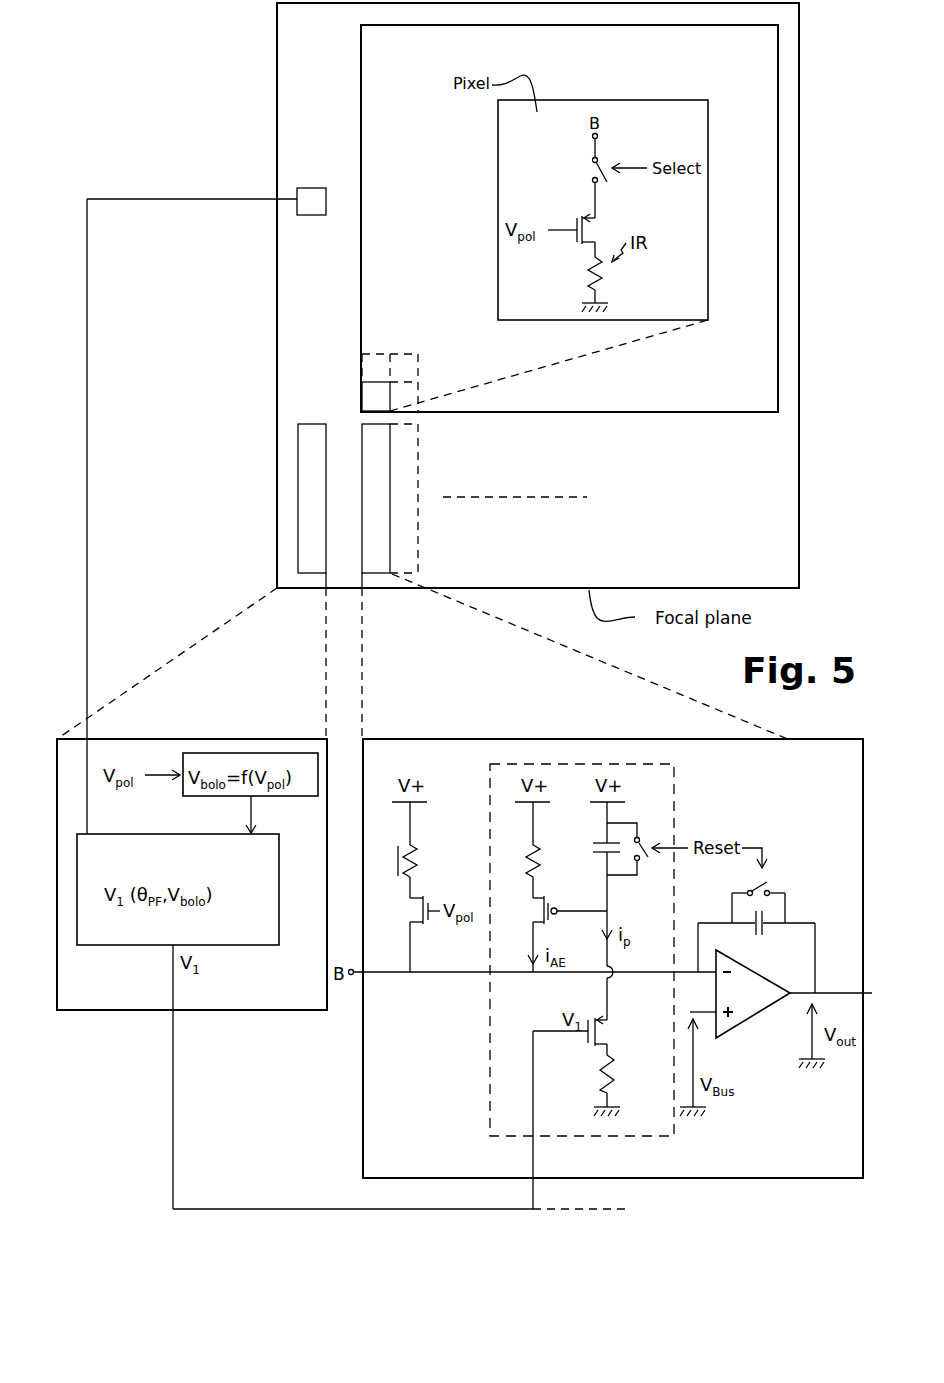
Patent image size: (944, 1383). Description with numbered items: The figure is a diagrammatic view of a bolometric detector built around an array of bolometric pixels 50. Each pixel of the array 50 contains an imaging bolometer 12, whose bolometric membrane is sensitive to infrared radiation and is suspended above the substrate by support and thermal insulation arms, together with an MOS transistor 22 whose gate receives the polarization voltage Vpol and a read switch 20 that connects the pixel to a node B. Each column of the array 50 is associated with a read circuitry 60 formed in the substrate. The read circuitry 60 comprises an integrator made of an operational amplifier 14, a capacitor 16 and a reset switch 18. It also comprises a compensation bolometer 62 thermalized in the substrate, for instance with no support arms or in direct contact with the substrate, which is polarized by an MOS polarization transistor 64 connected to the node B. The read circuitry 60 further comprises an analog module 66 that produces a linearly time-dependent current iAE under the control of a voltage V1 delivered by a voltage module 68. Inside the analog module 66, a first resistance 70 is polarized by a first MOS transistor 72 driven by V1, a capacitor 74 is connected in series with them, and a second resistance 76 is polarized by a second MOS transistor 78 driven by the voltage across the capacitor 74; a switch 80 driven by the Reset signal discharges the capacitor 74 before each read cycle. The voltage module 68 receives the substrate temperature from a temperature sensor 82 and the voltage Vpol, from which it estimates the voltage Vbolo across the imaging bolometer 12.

The imaging bolometer 12 is at (598, 283).
The operational amplifier 14 is at (758, 1004).
The capacitor 16 is at (767, 930).
The reset switch 18 is at (767, 882).
The read switch 20 is at (592, 171).
The MOS transistor 22 is at (590, 227).
The array of bolometric pixels 50 is at (361, 57).
The read circuitry 60 is at (363, 1082).
The compensation bolometer 62 is at (418, 858).
The MOS polarization transistor 64 is at (413, 913).
The analog module 66 is at (490, 1102).
The voltage module 68 is at (138, 1011).
The first resistance 70 is at (613, 1068).
The first MOS transistor 72 is at (602, 1046).
The capacitor 74 is at (600, 842).
The second resistance 76 is at (545, 857).
The second MOS transistor 78 is at (540, 913).
The switch 80 is at (640, 842).
The temperature sensor 82 is at (306, 197).